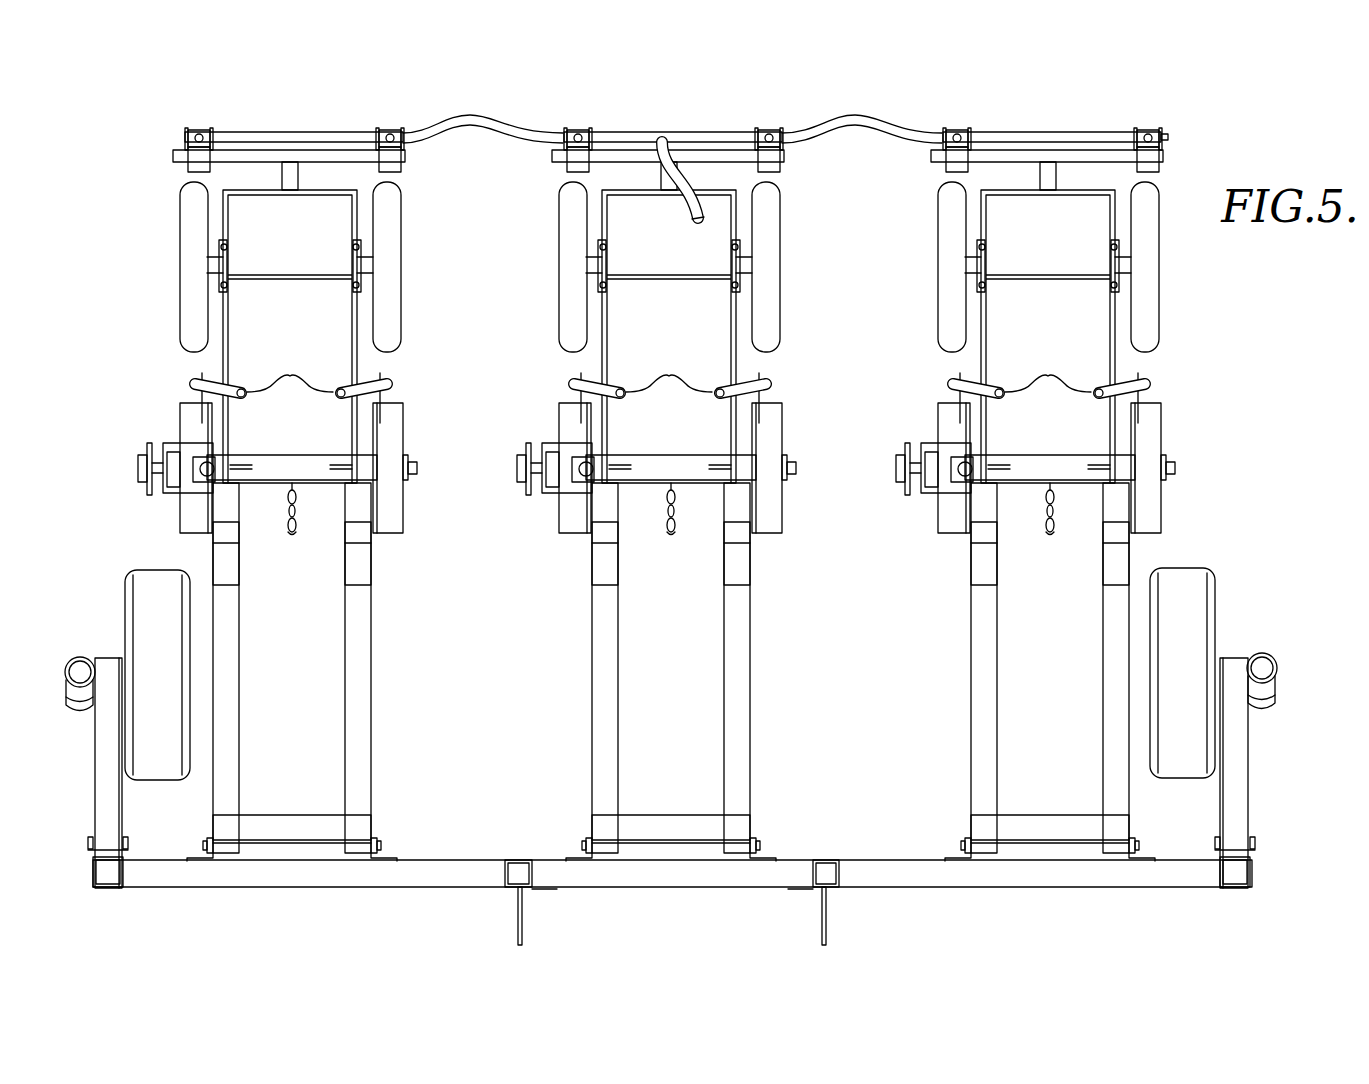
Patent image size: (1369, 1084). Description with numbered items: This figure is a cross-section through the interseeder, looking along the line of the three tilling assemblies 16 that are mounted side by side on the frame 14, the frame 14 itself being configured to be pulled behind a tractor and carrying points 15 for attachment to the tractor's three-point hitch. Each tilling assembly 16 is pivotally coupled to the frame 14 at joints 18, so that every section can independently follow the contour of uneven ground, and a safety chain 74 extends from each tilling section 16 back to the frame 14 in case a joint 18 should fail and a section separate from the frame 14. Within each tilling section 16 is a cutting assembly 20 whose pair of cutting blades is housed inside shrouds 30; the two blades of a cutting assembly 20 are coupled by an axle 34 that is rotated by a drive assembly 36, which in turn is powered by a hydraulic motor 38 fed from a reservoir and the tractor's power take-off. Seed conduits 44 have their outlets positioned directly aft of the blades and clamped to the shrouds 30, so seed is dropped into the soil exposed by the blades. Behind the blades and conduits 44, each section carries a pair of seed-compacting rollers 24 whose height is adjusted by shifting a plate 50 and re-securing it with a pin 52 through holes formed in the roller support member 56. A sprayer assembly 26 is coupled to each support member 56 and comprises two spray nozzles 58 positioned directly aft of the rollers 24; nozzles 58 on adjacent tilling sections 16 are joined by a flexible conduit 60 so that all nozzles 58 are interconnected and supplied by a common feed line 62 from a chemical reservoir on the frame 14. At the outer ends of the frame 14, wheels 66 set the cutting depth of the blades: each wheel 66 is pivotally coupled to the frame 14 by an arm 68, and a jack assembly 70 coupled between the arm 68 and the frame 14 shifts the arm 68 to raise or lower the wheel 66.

The frame 14 is at (325, 888).
The points 15 is at (513, 920).
The tilling assembly 16 is at (762, 745).
The joint 18 is at (200, 840).
The cutting assembly 20 is at (730, 506).
The seed-compacting roller 24 is at (666, 267).
The sprayer assembly 26 is at (670, 124).
The shroud 30 is at (670, 460).
The axle 34 is at (816, 464).
The drive assembly 36 is at (493, 454).
The hydraulic motor 38 is at (598, 455).
The conduit 44 is at (670, 381).
The plate 50 is at (605, 275).
The pin 52 is at (606, 247).
The roller support member 56 is at (607, 318).
The spray nozzle 58 is at (666, 127).
The flexible conduit 60 is at (488, 120).
The feed line 62 is at (693, 206).
The wheel 66 is at (140, 586).
The arm 68 is at (102, 805).
The jack assembly 70 is at (70, 660).
The safety chain 74 is at (685, 525).